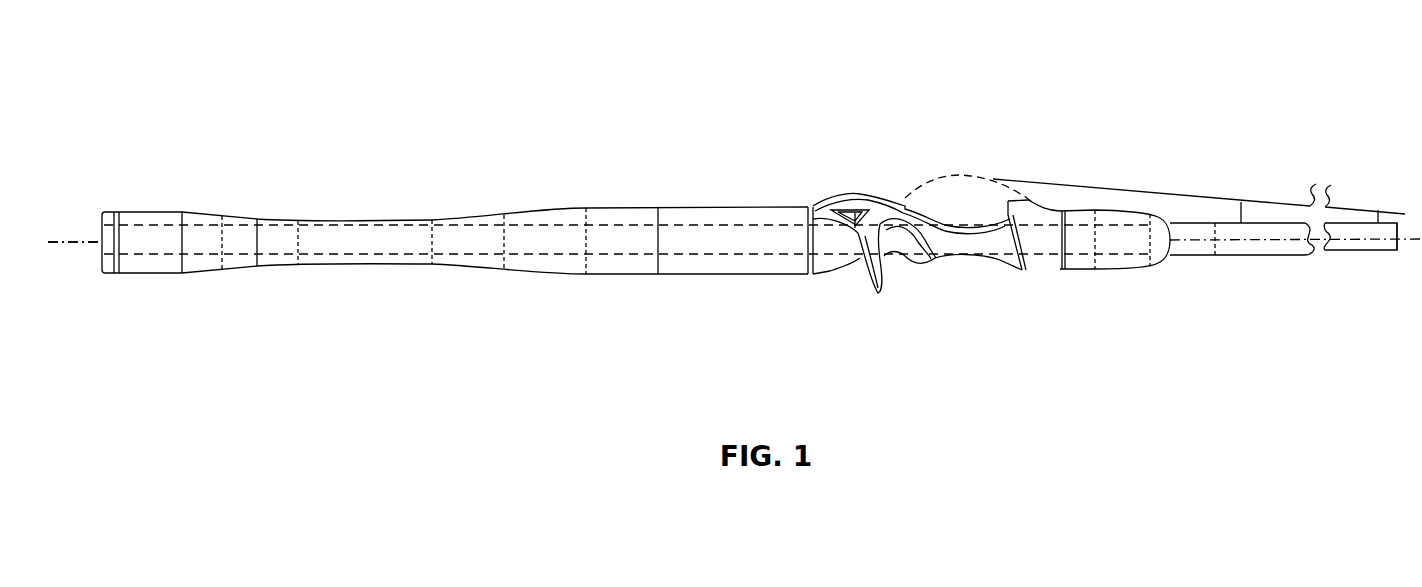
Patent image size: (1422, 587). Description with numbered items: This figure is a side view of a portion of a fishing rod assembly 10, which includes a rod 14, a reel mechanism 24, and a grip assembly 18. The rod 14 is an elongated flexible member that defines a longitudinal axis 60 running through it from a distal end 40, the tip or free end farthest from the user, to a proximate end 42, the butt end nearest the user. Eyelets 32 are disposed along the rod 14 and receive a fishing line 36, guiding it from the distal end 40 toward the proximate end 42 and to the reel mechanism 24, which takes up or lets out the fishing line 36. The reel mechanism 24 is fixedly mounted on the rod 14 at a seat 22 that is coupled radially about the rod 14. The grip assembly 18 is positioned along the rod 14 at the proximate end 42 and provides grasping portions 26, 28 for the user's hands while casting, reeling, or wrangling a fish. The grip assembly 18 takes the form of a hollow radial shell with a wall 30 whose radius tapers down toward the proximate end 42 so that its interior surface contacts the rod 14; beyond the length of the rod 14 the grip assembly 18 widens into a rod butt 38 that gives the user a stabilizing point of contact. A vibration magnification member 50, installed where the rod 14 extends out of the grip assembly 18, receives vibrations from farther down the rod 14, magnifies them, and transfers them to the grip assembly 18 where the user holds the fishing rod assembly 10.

The fishing rod assembly 10 is at (1062, 58).
The rod 14 is at (1238, 256).
The grip assembly 18 is at (846, 160).
The seat 22 is at (928, 220).
The reel mechanism 24 is at (983, 177).
The grasping portion 26 is at (936, 262).
The grasping portion 28 is at (683, 275).
The wall 30 is at (725, 206).
The eyelets 32 is at (1241, 202).
The fishing line 36 is at (1142, 193).
The rod butt 38 is at (138, 214).
The distal end 40 is at (1406, 256).
The proximate end 42 is at (92, 283).
The vibration magnification member 50 is at (702, 318).
The axis 60 is at (63, 241).